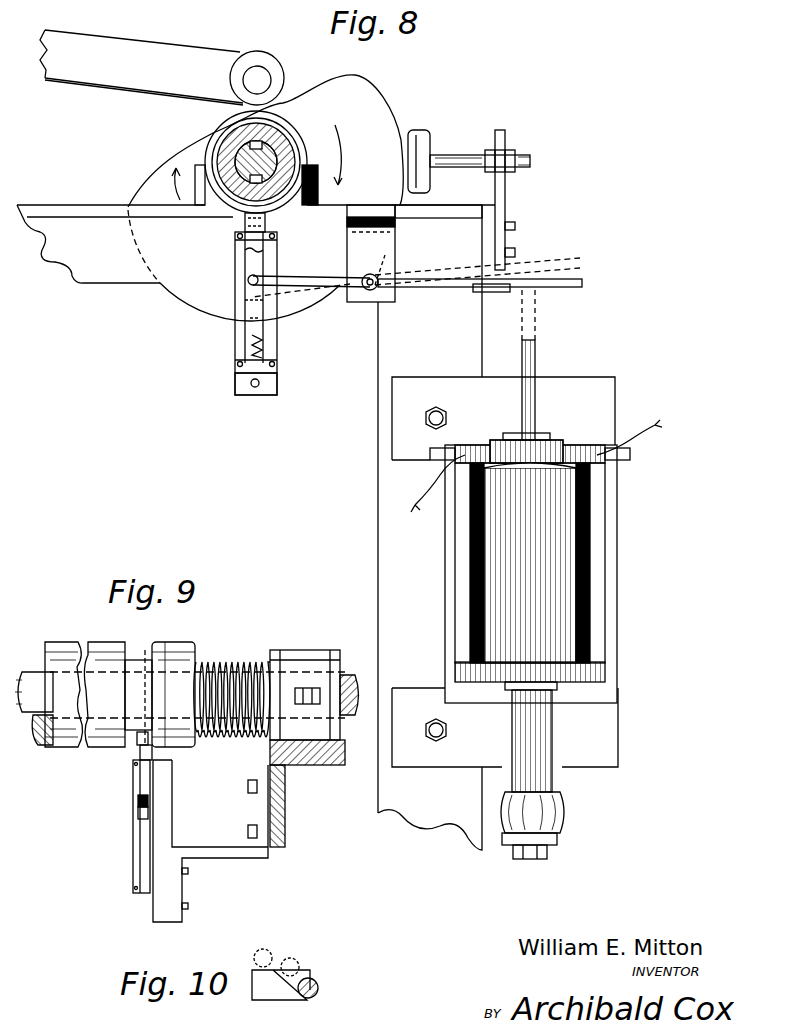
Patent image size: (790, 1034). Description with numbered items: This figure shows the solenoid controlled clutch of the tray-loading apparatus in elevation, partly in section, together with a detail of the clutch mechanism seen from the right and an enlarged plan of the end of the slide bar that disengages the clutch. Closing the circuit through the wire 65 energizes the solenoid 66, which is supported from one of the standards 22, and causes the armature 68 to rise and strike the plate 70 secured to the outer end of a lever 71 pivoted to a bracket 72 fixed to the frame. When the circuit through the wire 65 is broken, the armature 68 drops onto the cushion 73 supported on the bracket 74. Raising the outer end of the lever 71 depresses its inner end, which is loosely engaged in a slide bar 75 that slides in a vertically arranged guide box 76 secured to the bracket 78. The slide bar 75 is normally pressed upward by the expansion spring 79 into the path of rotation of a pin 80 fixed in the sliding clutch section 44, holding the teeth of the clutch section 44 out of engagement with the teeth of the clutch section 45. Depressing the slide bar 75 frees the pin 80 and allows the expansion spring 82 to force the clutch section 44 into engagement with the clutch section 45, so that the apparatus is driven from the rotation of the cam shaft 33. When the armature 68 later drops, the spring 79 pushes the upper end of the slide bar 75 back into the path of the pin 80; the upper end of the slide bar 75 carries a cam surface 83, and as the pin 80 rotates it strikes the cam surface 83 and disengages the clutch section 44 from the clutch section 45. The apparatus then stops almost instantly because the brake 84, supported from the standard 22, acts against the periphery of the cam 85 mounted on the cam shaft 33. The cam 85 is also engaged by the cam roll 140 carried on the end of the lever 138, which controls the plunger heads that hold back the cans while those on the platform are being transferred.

In FIG. 8, the standard 22 is at (405, 562).
In FIG. 8, the cam shaft 33 is at (270, 162).
In FIG. 9, the cam shaft 33 is at (346, 672).
In FIG. 8, the sliding clutch section 44 is at (285, 156).
In FIG. 9, the sliding clutch section 44 is at (188, 650).
In FIG. 9, the clutch section 45 is at (60, 645).
In FIG. 8, the wire 65 is at (418, 486).
In FIG. 8, the solenoid 66 is at (541, 652).
In FIG. 8, the armature 68 is at (535, 362).
In FIG. 8, the plate 70 is at (584, 284).
In FIG. 8, the lever 71 is at (456, 290).
In FIG. 9, the lever 71 is at (138, 808).
In FIG. 8, the bracket 72 is at (382, 262).
In FIG. 8, the cushion 73 is at (565, 806).
In FIG. 8, the bracket 74 is at (560, 846).
In FIG. 8, the slide bar 75 is at (255, 308).
In FIG. 10, the slide bar 75 is at (287, 1000).
In FIG. 8, the guide box 76 is at (251, 332).
In FIG. 9, the guide box 76 is at (113, 826).
In FIG. 8, the bracket 78 is at (268, 390).
In FIG. 9, the bracket 78 is at (170, 905).
In FIG. 8, the expansion spring 79 is at (268, 351).
In FIG. 8, the pin 80 is at (240, 217).
In FIG. 9, the pin 80 is at (152, 748).
In FIG. 10, the pin 80 is at (312, 980).
In FIG. 9, the expansion spring 82 is at (248, 665).
In FIG. 9, the cam surface 83 is at (140, 745).
In FIG. 10, the cam surface 83 is at (300, 972).
In FIG. 8, the brake 84 is at (425, 138).
In FIG. 8, the cam 85 is at (390, 112).
In FIG. 8, the lever 138 is at (186, 57).
In FIG. 8, the cam roll 140 is at (283, 79).